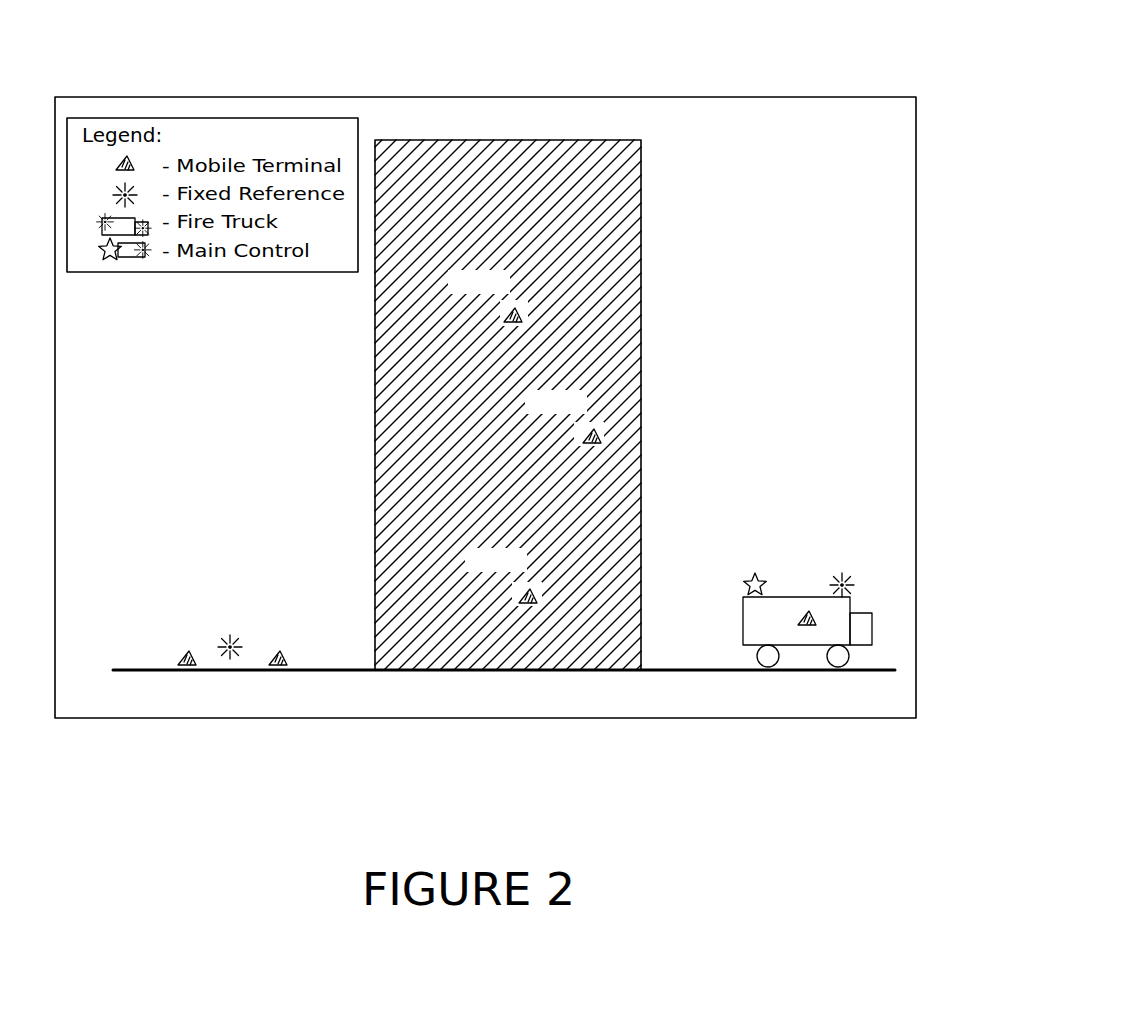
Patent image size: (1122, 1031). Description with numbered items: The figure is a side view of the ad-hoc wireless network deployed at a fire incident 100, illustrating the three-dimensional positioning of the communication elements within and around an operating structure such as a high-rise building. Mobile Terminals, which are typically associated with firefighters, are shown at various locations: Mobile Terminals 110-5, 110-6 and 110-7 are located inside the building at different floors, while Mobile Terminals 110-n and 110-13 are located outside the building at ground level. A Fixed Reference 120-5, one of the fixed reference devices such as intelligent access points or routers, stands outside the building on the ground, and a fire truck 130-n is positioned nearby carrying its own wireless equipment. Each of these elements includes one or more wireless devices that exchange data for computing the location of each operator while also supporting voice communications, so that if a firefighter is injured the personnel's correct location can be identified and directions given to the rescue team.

The fire incident 100 is at (714, 62).
The Mobile Terminal 110-5 is at (507, 318).
The Mobile Terminal 110-6 is at (586, 439).
The Mobile Terminal 110-7 is at (522, 599).
The Mobile Terminal 110-n is at (180, 660).
The Mobile Terminal 110-13 is at (285, 660).
The Fixed Reference 120-5 is at (226, 636).
The fire truck 130-n is at (743, 615).